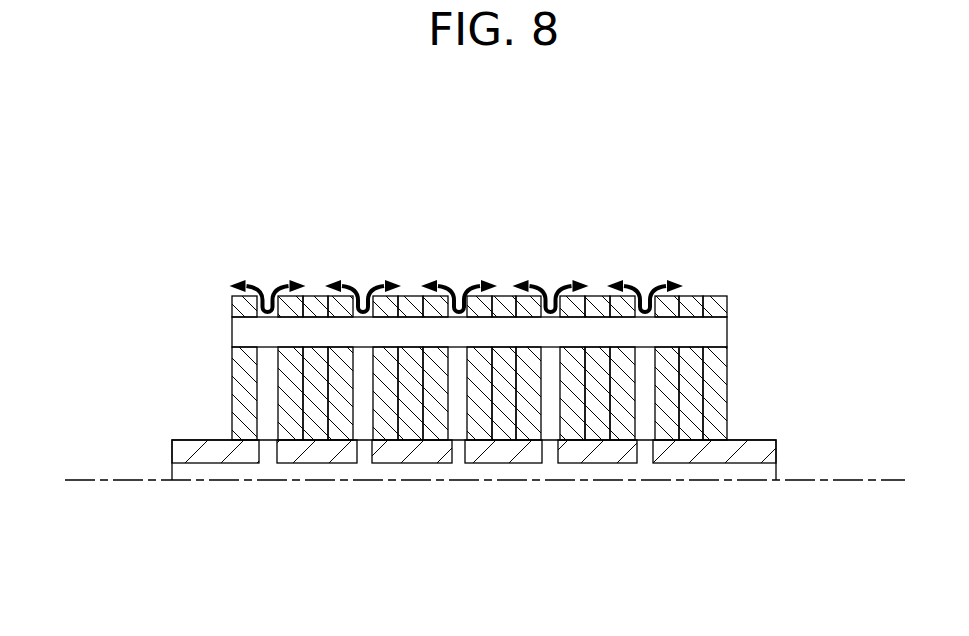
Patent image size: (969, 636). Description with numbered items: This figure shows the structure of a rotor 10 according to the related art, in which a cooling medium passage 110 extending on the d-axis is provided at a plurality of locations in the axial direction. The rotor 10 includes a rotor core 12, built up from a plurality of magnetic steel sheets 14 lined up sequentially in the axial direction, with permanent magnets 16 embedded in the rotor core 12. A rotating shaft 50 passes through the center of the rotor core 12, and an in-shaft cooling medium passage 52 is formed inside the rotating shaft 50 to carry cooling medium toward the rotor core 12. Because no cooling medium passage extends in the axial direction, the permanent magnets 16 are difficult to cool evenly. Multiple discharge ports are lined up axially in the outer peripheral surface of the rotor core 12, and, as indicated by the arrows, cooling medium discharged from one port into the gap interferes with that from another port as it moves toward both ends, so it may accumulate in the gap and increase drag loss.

The rotor 10 is at (288, 258).
The rotor core 12 is at (727, 301).
The magnetic steel sheets 14 is at (572, 418).
The permanent magnets 16 is at (492, 335).
The rotating shaft 50 is at (765, 442).
The in-shaft cooling medium passage 52 is at (378, 464).
The cooling medium passage 110 is at (357, 382).